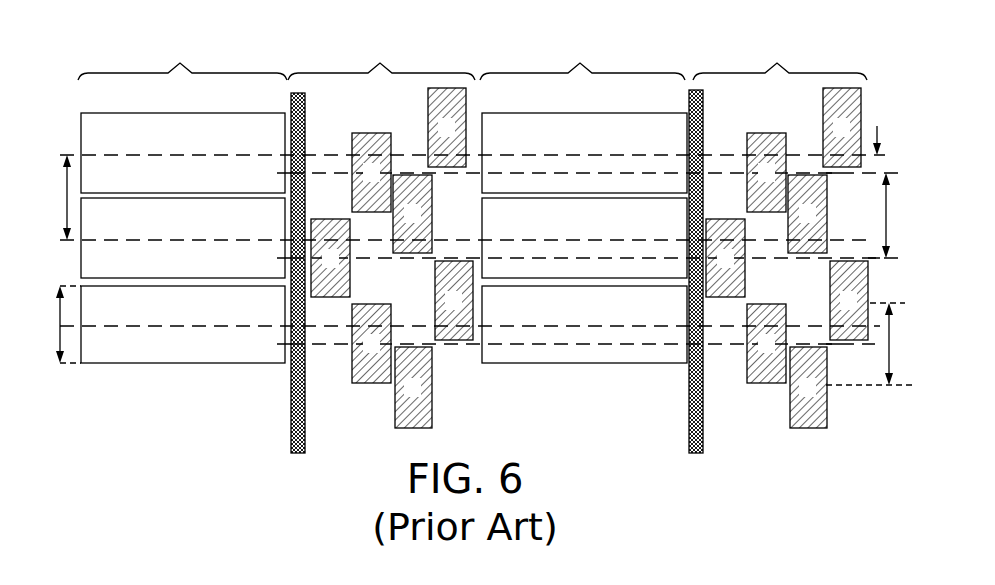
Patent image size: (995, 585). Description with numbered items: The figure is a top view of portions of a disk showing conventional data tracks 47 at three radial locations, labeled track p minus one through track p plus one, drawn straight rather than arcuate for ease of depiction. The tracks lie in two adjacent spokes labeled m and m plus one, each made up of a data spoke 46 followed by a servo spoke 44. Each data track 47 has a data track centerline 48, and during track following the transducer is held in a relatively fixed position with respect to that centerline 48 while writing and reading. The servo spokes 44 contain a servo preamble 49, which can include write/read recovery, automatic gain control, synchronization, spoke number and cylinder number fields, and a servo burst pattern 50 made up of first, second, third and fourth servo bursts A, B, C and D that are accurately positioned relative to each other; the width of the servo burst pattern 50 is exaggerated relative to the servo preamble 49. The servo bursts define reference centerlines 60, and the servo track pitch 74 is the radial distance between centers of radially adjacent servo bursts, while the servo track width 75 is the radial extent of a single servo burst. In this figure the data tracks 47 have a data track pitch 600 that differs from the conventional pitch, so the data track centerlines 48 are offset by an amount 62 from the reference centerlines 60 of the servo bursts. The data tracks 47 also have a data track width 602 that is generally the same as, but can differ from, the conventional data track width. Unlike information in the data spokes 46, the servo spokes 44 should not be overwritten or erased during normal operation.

The servo spoke 44 is at (577, 59).
The data spoke 46 is at (381, 59).
The data track 47 is at (384, 238).
The data track centerline 48 is at (110, 344).
The servo preamble 49 is at (714, 107).
The servo burst pattern 50 is at (375, 437).
The reference centerline of the servo bursts 60 is at (845, 361).
The offset amount 62 is at (887, 140).
The servo track pitch 74 is at (899, 344).
The servo track width 75 is at (896, 215).
The data track pitch 600 is at (53, 197).
The data track width 602 is at (46, 324).